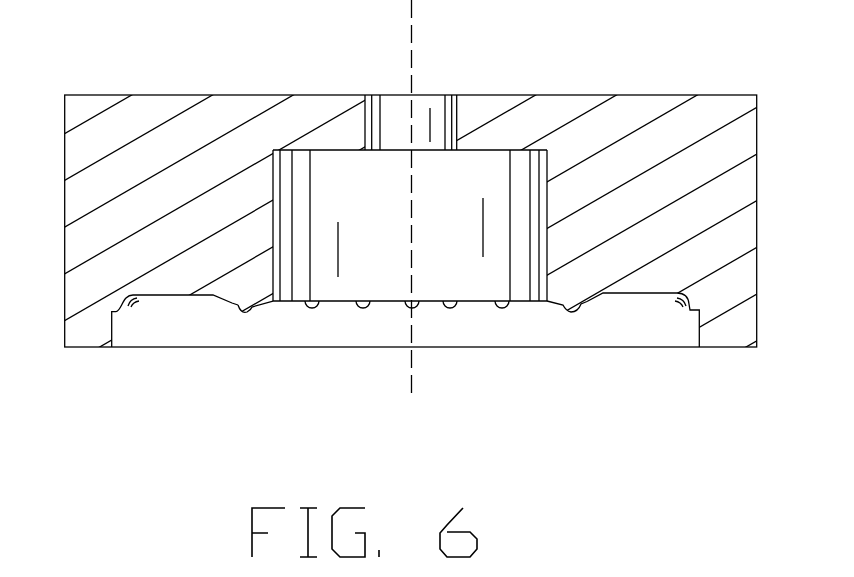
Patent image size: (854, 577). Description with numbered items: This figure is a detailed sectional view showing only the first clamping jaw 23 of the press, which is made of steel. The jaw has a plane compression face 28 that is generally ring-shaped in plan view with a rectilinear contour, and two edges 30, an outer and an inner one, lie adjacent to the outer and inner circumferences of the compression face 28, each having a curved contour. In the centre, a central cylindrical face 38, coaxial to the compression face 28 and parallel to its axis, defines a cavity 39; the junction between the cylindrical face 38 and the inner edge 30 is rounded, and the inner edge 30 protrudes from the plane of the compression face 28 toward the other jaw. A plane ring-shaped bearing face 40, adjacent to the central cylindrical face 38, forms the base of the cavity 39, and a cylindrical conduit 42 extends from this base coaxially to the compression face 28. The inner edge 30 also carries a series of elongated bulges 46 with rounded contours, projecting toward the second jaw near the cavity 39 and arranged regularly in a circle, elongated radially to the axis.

The first clamping jaw 23 is at (160, 112).
The cylindrical conduit 42 is at (366, 122).
The bearing face 40 is at (318, 152).
The cavity 39 is at (466, 262).
The central cylindrical face 38 is at (272, 278).
The compression face 28 is at (173, 295).
The edge 30 is at (130, 305).
The elongated bulge 46 is at (315, 310).